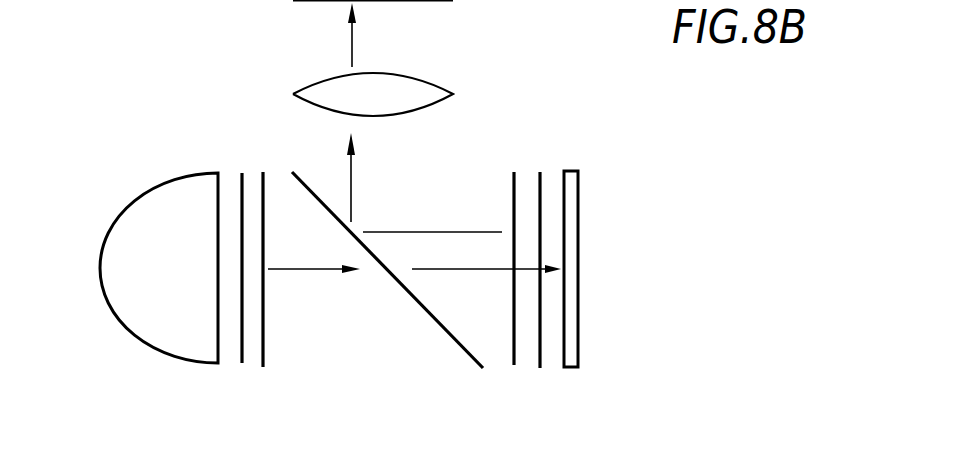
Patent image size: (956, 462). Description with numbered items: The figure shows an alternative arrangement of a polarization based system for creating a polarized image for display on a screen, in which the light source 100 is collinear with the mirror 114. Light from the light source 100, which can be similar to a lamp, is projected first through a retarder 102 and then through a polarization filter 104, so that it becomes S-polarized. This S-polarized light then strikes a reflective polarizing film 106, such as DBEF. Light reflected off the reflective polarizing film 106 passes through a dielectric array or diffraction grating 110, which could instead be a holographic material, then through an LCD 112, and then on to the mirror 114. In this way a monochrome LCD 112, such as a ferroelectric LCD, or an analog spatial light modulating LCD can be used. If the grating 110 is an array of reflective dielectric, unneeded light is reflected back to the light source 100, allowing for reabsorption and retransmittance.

The light source 100 is at (140, 340).
The retarder 102 is at (242, 172).
The polarization filter 104 is at (263, 367).
The reflective polarizing film 106 is at (465, 355).
The diffraction grating 110 is at (516, 170).
The LCD 112 is at (540, 368).
The mirror 114 is at (578, 170).